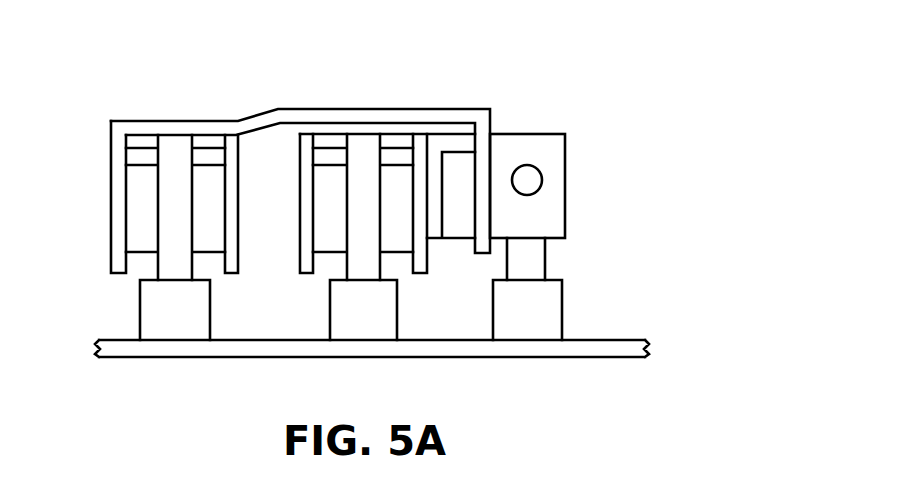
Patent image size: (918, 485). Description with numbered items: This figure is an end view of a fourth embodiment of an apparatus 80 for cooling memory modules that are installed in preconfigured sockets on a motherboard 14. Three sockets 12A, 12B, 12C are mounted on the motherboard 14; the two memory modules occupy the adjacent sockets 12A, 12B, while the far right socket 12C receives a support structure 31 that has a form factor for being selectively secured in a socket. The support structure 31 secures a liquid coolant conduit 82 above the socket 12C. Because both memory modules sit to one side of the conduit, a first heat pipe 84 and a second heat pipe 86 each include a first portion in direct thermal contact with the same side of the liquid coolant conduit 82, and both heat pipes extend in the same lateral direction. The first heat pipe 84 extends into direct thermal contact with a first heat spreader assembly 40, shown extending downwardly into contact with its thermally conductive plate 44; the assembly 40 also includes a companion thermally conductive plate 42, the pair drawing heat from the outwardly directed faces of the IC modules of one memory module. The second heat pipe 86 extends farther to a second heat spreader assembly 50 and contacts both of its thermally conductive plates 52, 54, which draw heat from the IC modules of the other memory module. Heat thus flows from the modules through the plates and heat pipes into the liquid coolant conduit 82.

The motherboard 14 is at (608, 340).
The memory module socket 12A is at (140, 302).
The memory module socket 12B is at (330, 330).
The memory module socket 12C is at (493, 330).
The second heat pipe 86 is at (375, 109).
The second heat spreader assembly 50 is at (160, 174).
The thermally conductive plate 54 is at (111, 187).
The thermally conductive plate 52 is at (238, 178).
The first heat spreader assembly 40 is at (345, 169).
The thermally conductive plate 42 is at (300, 178).
The thermally conductive plate 44 is at (428, 253).
The first heat pipe 84 is at (457, 133).
The apparatus for cooling the memory modules 80 is at (554, 148).
The liquid coolant conduit 82 is at (550, 137).
The support structure 31 is at (547, 253).